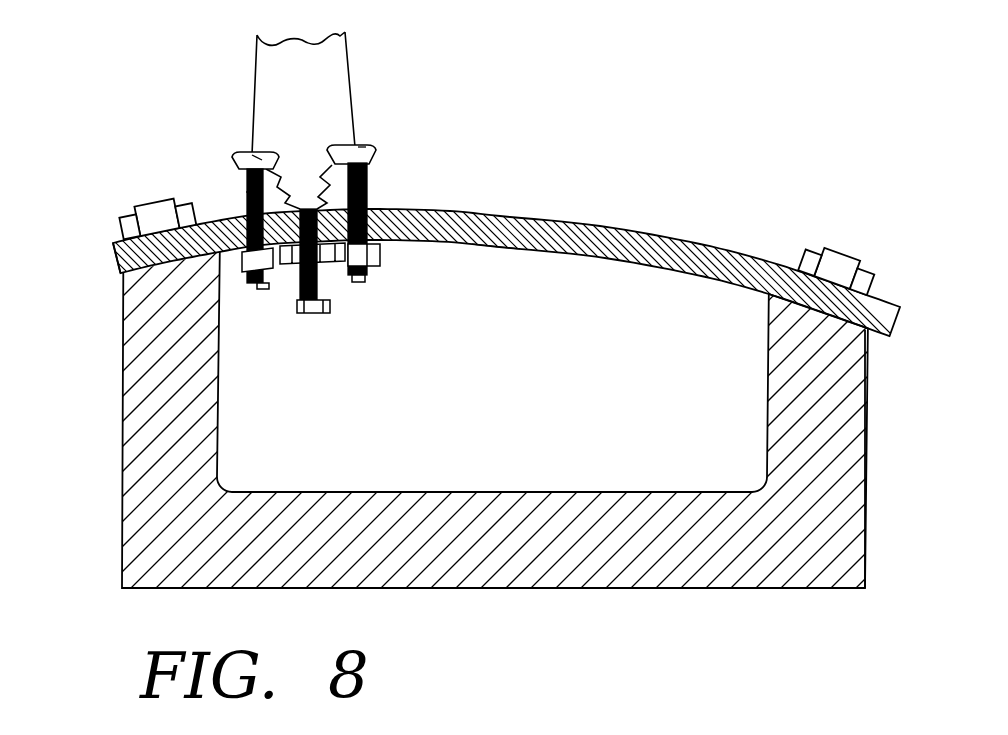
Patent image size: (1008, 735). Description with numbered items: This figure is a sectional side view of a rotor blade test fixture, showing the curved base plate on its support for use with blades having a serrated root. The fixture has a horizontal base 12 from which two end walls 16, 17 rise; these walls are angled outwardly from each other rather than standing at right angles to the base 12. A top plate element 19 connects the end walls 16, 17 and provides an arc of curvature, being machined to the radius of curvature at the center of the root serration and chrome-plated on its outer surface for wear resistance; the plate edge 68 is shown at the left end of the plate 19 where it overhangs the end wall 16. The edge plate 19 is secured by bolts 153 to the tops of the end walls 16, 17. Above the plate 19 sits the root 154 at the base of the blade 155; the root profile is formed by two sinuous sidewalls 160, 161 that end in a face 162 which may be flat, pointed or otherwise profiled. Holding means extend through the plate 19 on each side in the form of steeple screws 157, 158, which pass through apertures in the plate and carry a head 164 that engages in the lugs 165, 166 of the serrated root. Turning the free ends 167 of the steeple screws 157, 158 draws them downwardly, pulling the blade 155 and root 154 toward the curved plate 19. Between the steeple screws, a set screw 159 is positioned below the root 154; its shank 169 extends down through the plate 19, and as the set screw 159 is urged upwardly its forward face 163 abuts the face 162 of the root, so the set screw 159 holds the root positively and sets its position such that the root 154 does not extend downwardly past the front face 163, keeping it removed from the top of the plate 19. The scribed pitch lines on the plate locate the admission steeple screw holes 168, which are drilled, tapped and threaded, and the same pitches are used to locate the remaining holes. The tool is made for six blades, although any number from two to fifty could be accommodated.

The horizontal base 12 is at (560, 588).
The end wall 16 is at (122, 500).
The end wall 17 is at (866, 445).
The top plate element 19 is at (605, 228).
The plate edge 68 is at (117, 277).
The bolt 153 is at (150, 212).
The root 154 is at (300, 167).
The blade 155 is at (350, 33).
The steeple screw 157 is at (238, 166).
The steeple screw 158 is at (377, 149).
The set screw 159 is at (311, 316).
The sinuous sidewall 160 is at (246, 193).
The sinuous sidewall 161 is at (368, 190).
The face 162 is at (472, 246).
The forward face 163 is at (285, 272).
The head 164 is at (235, 158).
The lug 165 is at (358, 147).
The lug 166 is at (252, 155).
The free end 167 is at (365, 281).
The admission steeple screw hole 168 is at (378, 243).
The center screw shank 169 is at (320, 292).